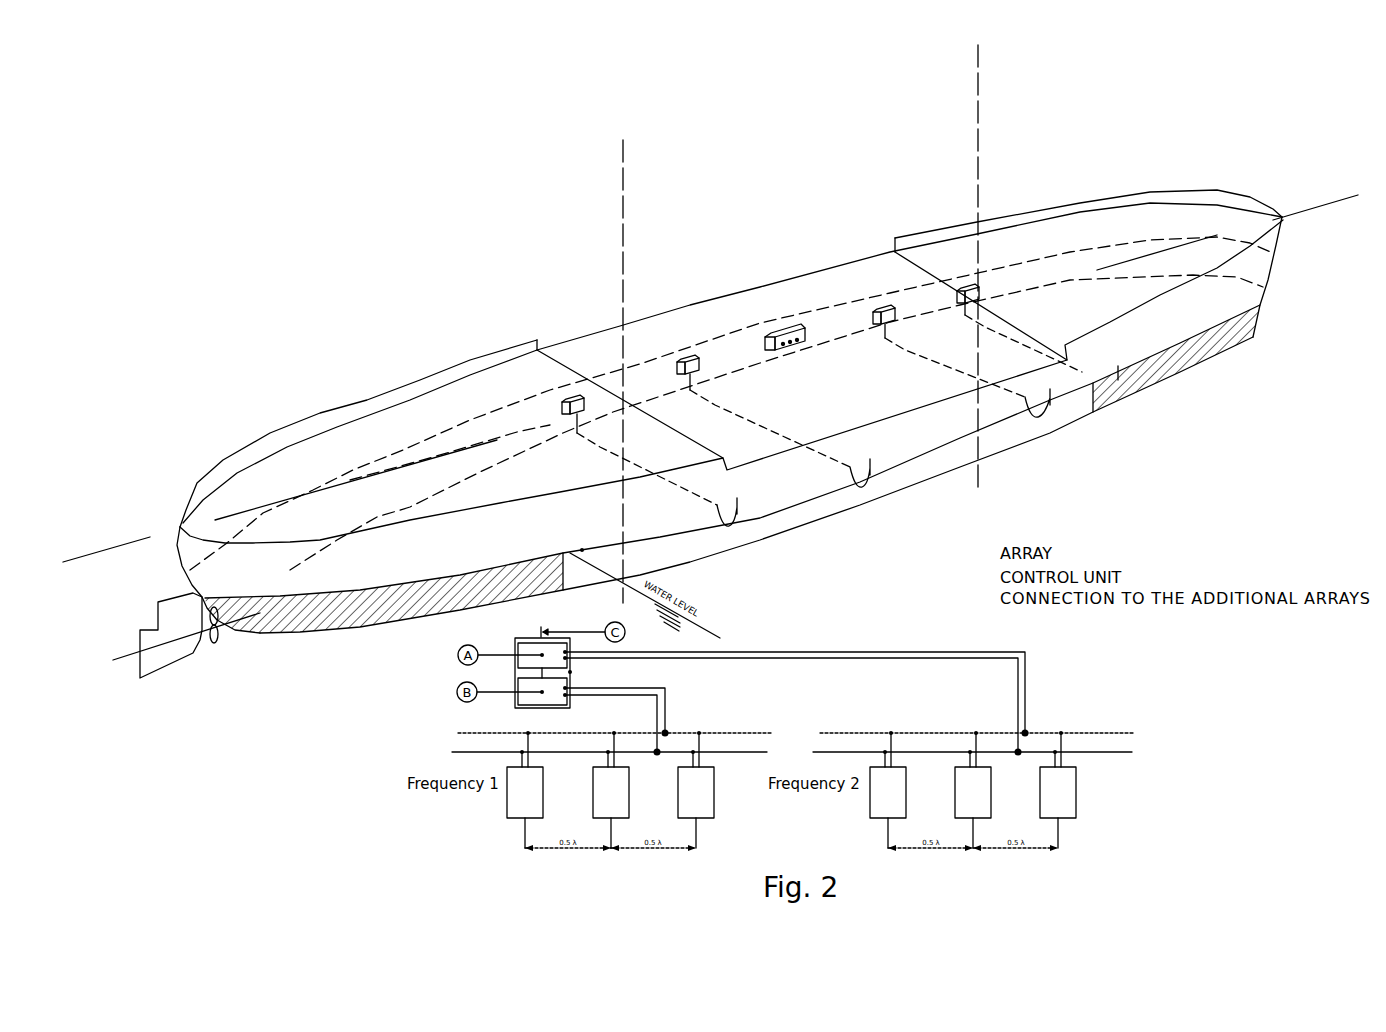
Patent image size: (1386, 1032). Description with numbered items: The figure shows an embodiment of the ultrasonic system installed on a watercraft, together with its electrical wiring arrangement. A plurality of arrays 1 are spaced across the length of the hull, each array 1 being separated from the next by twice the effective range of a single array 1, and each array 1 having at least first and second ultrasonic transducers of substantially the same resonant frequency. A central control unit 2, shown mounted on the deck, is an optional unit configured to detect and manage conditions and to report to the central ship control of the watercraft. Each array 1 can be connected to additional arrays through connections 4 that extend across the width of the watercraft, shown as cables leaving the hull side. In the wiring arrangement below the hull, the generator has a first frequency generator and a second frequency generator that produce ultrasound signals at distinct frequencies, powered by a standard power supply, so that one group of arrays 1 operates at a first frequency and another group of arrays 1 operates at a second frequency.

The array 1 is at (572, 400).
The central control unit 2 is at (782, 335).
The connection 4 is at (698, 505).